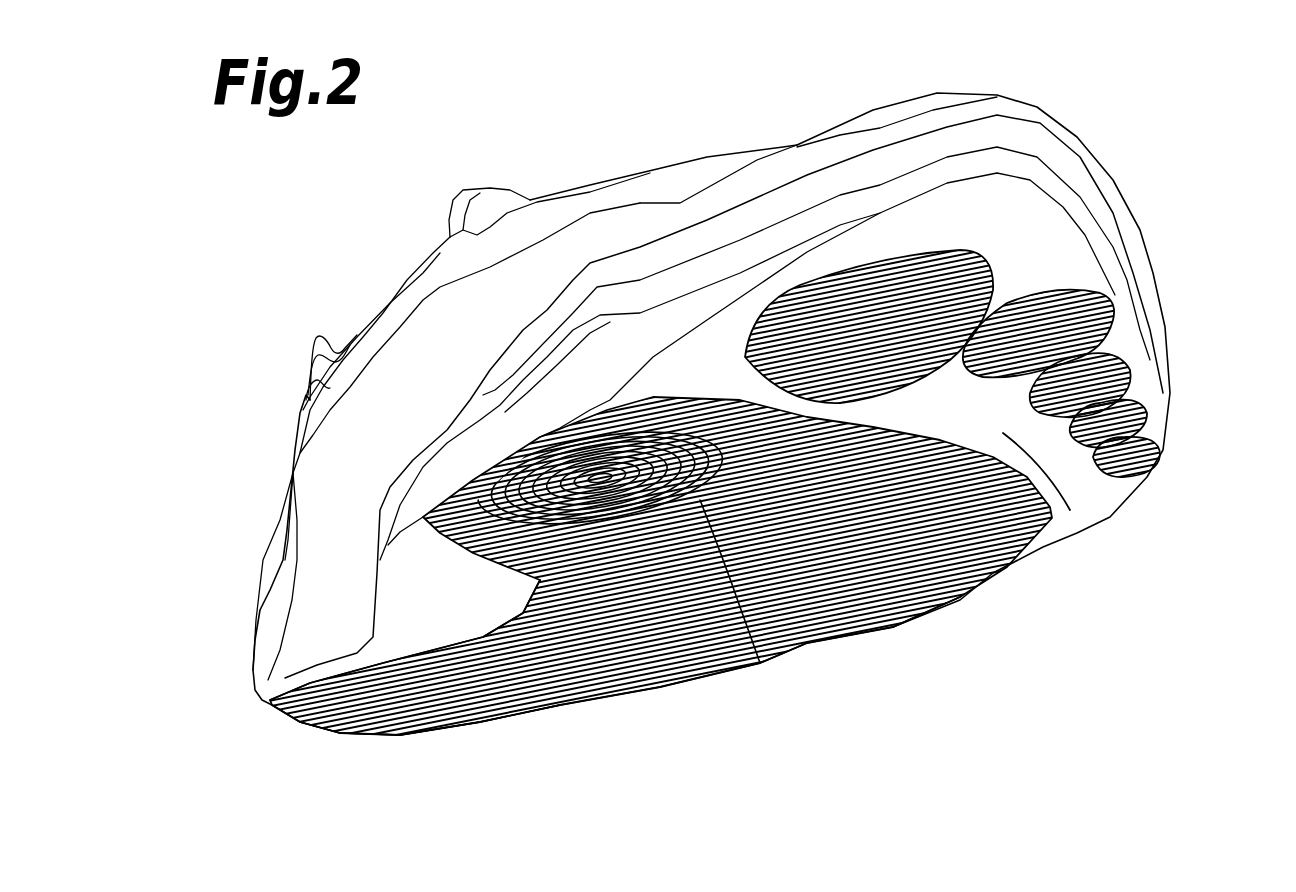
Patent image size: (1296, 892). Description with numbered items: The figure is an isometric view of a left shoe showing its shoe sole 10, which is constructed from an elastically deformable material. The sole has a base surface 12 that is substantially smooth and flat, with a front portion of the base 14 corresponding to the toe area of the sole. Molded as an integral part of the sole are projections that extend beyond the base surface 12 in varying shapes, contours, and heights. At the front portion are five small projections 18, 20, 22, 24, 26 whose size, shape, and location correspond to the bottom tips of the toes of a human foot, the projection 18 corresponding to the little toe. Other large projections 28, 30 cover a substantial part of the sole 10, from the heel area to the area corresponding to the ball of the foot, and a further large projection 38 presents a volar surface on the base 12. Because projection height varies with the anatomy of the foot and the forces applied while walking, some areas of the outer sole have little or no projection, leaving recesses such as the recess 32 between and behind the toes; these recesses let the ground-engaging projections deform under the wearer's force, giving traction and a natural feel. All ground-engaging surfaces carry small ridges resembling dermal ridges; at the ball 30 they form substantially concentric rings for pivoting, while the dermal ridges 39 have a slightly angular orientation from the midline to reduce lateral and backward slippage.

The shoe sole 10 is at (1133, 133).
The base surface 12 is at (285, 678).
The front portion of the base 14 is at (1157, 503).
The projection 18 is at (1160, 450).
The projection 20 is at (1147, 407).
The projection 22 is at (1127, 363).
The projection 24 is at (1107, 297).
The projection 26 is at (980, 253).
The large projection 28 is at (310, 733).
The large projection 30 is at (547, 480).
The recess 32 is at (1070, 510).
The large projection 38 is at (910, 603).
The dermal ridges 39 is at (760, 663).